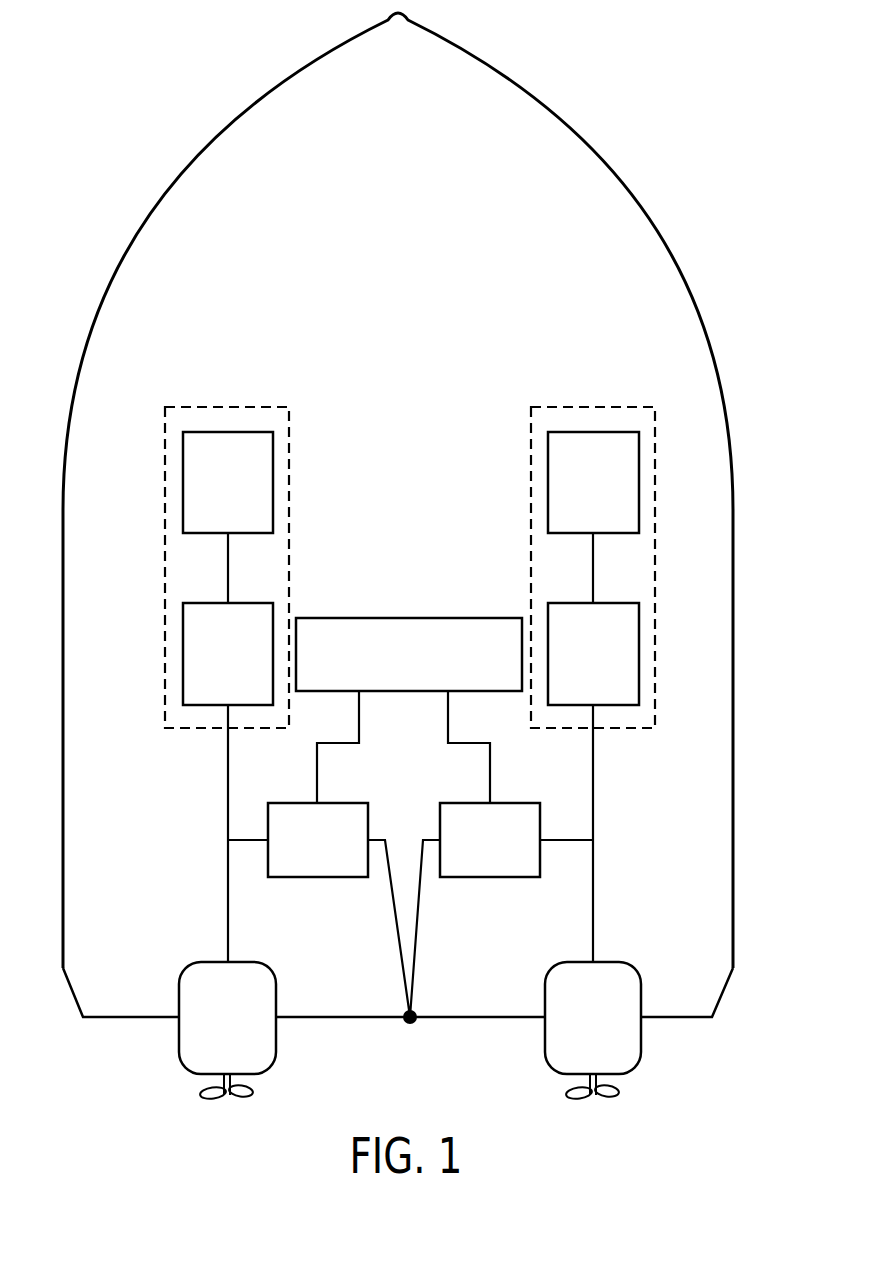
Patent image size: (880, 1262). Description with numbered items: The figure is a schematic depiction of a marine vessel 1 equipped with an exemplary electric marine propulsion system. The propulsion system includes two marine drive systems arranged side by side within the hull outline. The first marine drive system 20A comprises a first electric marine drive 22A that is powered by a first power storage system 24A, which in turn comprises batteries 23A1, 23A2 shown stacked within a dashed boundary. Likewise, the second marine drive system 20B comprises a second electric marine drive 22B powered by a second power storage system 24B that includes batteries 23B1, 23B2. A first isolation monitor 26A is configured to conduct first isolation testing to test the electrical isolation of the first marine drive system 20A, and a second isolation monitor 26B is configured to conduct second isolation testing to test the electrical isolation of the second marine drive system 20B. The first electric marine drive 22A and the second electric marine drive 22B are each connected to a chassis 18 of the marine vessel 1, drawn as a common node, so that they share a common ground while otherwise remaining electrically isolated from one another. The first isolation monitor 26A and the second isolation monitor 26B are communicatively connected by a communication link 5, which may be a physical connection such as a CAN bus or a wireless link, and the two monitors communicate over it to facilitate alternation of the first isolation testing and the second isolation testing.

The marine vessel 1 is at (494, 73).
The communication link 5 is at (410, 618).
The chassis 18 is at (428, 1038).
The first marine drive system 20A is at (207, 533).
The second marine drive system 20B is at (603, 533).
The first electric marine drive 22A is at (205, 962).
The second electric marine drive 22B is at (613, 962).
The battery 23A1 is at (183, 500).
The battery 23A2 is at (183, 672).
The battery 23B1 is at (639, 500).
The battery 23B2 is at (639, 672).
The first power storage system 24A is at (242, 407).
The second power storage system 24B is at (605, 407).
The first isolation monitor 26A is at (317, 877).
The second isolation monitor 26B is at (504, 877).